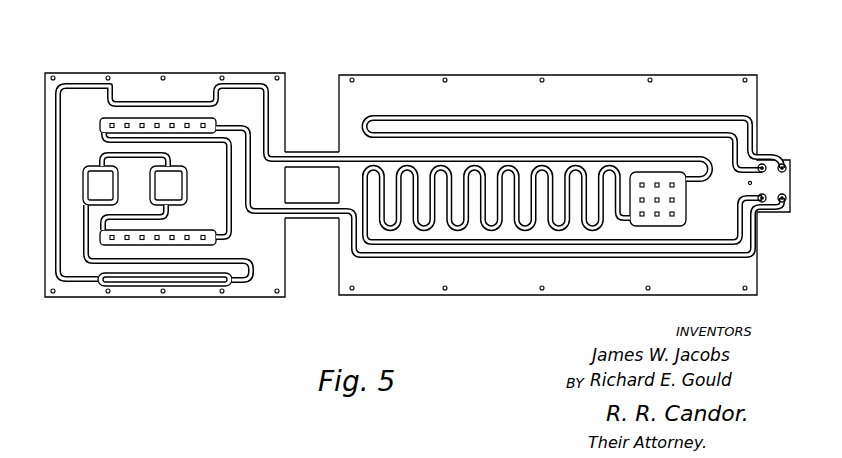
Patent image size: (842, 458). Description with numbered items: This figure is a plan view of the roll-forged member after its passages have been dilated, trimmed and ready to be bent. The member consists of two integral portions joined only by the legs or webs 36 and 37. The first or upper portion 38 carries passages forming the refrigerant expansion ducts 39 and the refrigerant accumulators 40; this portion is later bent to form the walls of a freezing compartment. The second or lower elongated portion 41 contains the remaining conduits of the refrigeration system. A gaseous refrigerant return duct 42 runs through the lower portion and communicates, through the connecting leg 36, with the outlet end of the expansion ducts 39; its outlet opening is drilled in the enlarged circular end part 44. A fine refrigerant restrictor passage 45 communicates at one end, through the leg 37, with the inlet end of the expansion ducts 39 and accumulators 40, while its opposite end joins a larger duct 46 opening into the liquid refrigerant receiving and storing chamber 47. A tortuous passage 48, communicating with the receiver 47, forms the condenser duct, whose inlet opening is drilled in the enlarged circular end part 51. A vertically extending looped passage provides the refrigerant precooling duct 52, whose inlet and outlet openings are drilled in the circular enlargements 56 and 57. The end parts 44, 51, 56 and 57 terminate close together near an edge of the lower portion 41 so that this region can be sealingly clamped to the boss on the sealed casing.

The leg or web 36 is at (325, 220).
The leg or web 37 is at (306, 152).
The first or upper portion 38 is at (189, 73).
The refrigerant expansion ducts 39 is at (136, 103).
The refrigerant accumulators 40 is at (101, 117).
The second or lower elongated portion 41 is at (635, 74).
The gaseous refrigerant return duct 42 is at (477, 258).
The enlarged circular end part 44 is at (763, 204).
The refrigerant restrictor passage 45 is at (350, 158).
The larger duct 46 is at (708, 157).
The liquid refrigerant receiving and storing chamber 47 is at (678, 222).
The tortuous passage 48 is at (606, 224).
The enlarged circular end part 51 is at (785, 202).
The refrigerant superheat removing coil or precooling duct 52 is at (545, 115).
The circular enlargement 56 is at (764, 166).
The circular enlargement 57 is at (784, 166).